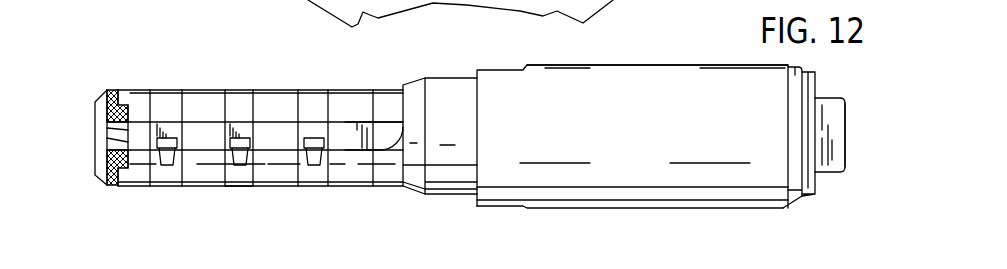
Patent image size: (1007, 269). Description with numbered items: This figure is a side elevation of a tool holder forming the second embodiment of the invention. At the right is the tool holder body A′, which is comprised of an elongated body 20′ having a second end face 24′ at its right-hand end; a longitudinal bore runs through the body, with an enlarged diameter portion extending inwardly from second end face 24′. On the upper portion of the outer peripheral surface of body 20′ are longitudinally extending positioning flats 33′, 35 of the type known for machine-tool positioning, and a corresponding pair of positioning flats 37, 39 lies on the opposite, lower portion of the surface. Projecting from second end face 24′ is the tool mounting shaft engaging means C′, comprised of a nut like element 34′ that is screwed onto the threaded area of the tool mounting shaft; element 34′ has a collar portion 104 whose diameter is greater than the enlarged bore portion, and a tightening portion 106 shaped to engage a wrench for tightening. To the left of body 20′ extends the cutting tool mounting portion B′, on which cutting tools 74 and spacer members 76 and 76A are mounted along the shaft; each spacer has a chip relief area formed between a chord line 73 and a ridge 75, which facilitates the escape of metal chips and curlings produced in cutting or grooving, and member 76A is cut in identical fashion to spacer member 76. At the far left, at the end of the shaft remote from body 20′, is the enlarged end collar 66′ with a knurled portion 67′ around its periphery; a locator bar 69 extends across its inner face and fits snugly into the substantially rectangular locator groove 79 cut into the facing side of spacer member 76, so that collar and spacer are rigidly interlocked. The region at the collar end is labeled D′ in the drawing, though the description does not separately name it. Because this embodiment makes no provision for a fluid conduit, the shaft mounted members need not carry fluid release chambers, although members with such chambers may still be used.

The elongated body 20′ is at (721, 80).
The second end face 24′ is at (802, 67).
The positioning flat 33′ is at (661, 65).
The nut like element 34′ is at (849, 116).
The positioning flat 35 is at (497, 78).
The positioning flat 37 is at (490, 208).
The positioning flat 39 is at (610, 208).
The end collar 66′ is at (110, 187).
The knurled portion 67′ is at (115, 90).
The locator bar 69 is at (107, 128).
The chord line 73 is at (345, 122).
The cutting tool member 74 is at (171, 88).
The ridge 75 is at (352, 152).
The spacer member 76 is at (138, 90).
The spacer member 76A is at (196, 190).
The locator groove 79 is at (107, 138).
The collar portion 104 is at (812, 195).
The tightening portion 106 is at (833, 172).
The tool holder body A′ is at (629, 126).
The cutting tool mounting portion B′ is at (232, 198).
The tool mounting shaft engaging means C′ is at (851, 161).
The end cap D′ is at (80, 155).